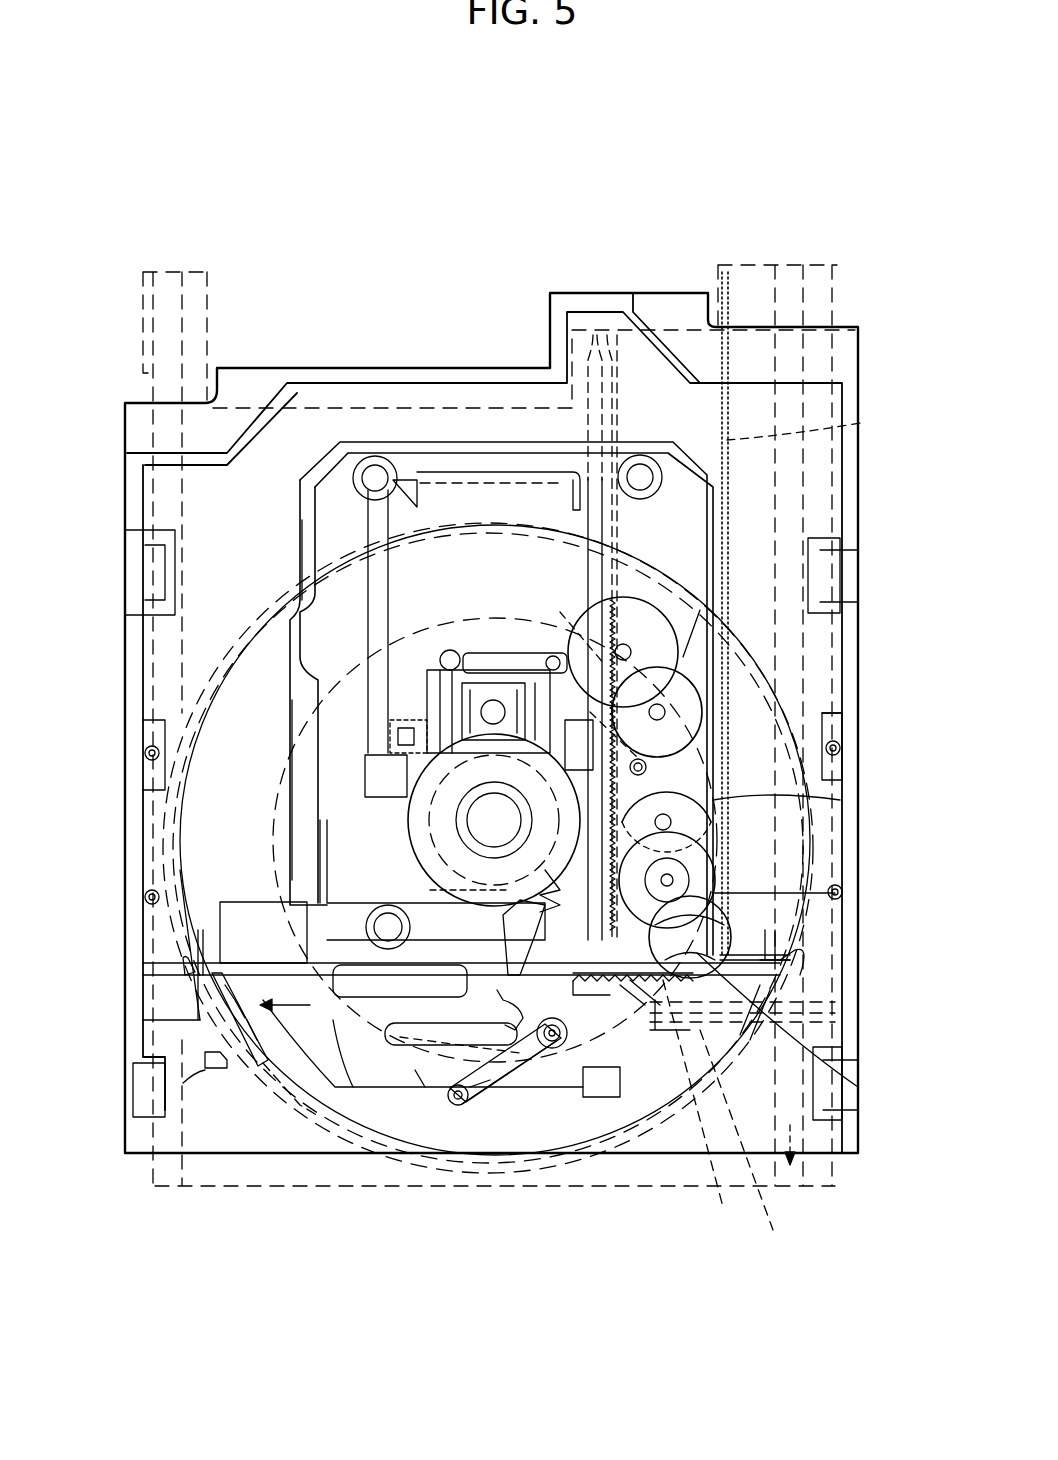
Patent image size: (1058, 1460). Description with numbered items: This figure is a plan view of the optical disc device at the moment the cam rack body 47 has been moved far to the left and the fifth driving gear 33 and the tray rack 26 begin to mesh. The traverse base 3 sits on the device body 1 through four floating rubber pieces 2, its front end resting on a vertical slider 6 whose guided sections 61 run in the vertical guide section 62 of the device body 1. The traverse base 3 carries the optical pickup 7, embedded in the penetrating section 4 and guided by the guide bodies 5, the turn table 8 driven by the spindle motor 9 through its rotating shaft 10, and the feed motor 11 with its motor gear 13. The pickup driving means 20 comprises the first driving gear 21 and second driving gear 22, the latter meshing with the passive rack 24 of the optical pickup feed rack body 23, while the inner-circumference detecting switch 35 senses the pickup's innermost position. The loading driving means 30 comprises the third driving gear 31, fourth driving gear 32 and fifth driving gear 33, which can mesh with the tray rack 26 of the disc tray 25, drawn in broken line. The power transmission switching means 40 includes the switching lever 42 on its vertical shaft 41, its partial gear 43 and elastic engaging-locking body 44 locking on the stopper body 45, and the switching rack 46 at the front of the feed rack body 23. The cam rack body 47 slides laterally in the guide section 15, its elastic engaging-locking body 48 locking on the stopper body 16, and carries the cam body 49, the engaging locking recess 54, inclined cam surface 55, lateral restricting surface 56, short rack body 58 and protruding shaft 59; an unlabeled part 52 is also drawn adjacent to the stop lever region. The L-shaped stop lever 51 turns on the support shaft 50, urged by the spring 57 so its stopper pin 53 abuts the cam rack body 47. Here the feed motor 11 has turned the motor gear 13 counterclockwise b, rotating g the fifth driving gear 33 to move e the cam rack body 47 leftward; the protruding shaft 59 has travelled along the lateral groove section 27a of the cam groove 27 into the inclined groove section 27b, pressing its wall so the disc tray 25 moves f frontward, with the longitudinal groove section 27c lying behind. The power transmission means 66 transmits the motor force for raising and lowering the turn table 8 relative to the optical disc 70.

The device body 1 is at (273, 385).
The floating rubber pieces 2 is at (372, 456).
The traverse base 3 is at (327, 500).
The penetrating section 4 is at (447, 490).
The guide bodies 5 is at (327, 560).
The vertical slider 6 is at (225, 905).
The optical pickup 7 is at (463, 660).
The turn table 8 is at (412, 840).
The spindle motor 9 is at (432, 810).
The rotating shaft 10 is at (458, 840).
The feed motor 11 is at (820, 727).
The motor gear 13 is at (648, 765).
The guide section 15 is at (165, 1002).
The stopper body 16 is at (175, 1082).
The pickup driving means 20 is at (683, 657).
The first driving gear 21 is at (688, 690).
The second driving gear 22 is at (650, 620).
The optical pickup feed rack body 23 is at (545, 700).
The passive rack 24 is at (568, 640).
The disc tray 25 is at (283, 1190).
The tray rack 26 is at (845, 425).
The cam groove 27 is at (743, 1151).
The lateral groove section 27a is at (835, 1015).
The inclined groove section 27b is at (708, 1111).
The longitudinal groove section 27c is at (610, 412).
The loading driving means 30 is at (712, 893).
The third driving gear 31 is at (700, 825).
The fourth driving gear 32 is at (700, 868).
The fifth driving gear 33 is at (770, 965).
The inner-circumference detecting switch 35 is at (400, 737).
The power transmission switching means 40 is at (521, 1100).
The vertical shaft 41 is at (494, 820).
The switching lever 42 is at (590, 985).
The partial gear 43 is at (550, 905).
The elastic engaging-locking body 44 is at (430, 888).
The stopper body 45 is at (470, 935).
The switching rack 46 is at (690, 937).
The cam rack body 47 is at (415, 1070).
The elastic engaging-locking body 48 is at (258, 1066).
The cam body 49 is at (350, 998).
The support shaft 50 is at (553, 1050).
The stop lever 51 is at (490, 1080).
The lever 52 is at (390, 1047).
The stopper pin 53 is at (464, 1106).
The engaging locking recess 54 is at (318, 1075).
The inclined cam surface 55 is at (330, 1078).
The lateral restricting surface 56 is at (463, 1106).
The spring 57 is at (580, 1092).
The short rack body 58 is at (710, 980).
The protruding shaft 59 is at (660, 1015).
The guided sections 61 is at (195, 905).
The vertical guide section 62 is at (160, 960).
The power transmission means 66 is at (858, 1087).
The optical disc 70 is at (505, 522).
The counterclockwise direction b is at (840, 800).
The leftward movement e is at (290, 1000).
The frontward movement f is at (790, 1182).
The rotation g is at (735, 955).